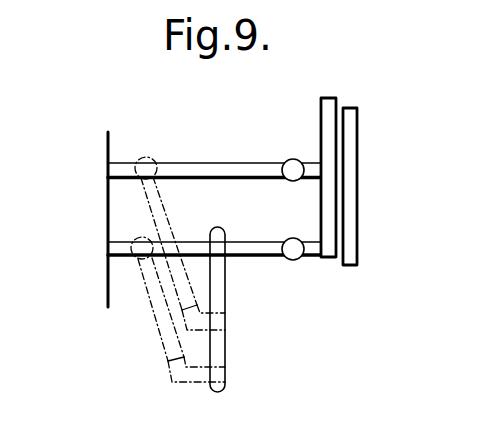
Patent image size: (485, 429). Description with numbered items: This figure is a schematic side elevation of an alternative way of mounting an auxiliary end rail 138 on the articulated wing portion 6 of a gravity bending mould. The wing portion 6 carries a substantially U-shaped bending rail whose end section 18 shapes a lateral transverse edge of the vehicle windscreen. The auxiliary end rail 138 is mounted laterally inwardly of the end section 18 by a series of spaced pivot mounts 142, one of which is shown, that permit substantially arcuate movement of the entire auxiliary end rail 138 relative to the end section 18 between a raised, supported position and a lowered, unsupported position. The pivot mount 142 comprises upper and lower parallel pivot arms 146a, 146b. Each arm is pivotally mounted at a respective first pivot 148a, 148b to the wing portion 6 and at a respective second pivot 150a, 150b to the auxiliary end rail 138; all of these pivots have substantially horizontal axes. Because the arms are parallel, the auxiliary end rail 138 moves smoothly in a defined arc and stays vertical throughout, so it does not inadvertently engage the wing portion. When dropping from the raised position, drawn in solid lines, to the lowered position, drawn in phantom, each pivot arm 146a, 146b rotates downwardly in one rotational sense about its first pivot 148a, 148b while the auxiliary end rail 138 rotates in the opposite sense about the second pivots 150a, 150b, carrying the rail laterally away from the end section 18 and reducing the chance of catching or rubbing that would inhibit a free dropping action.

The wing portion 6 is at (107, 211).
The end section 18 is at (358, 190).
The auxiliary end rail 138 is at (320, 125).
The pivot mount 142 is at (315, 80).
The upper pivot arm 146a is at (198, 162).
The lower pivot arm 146b is at (263, 257).
The first pivot 148a is at (142, 157).
The first pivot 148b is at (133, 259).
The second pivot 150a is at (293, 182).
The second pivot 150b is at (295, 261).